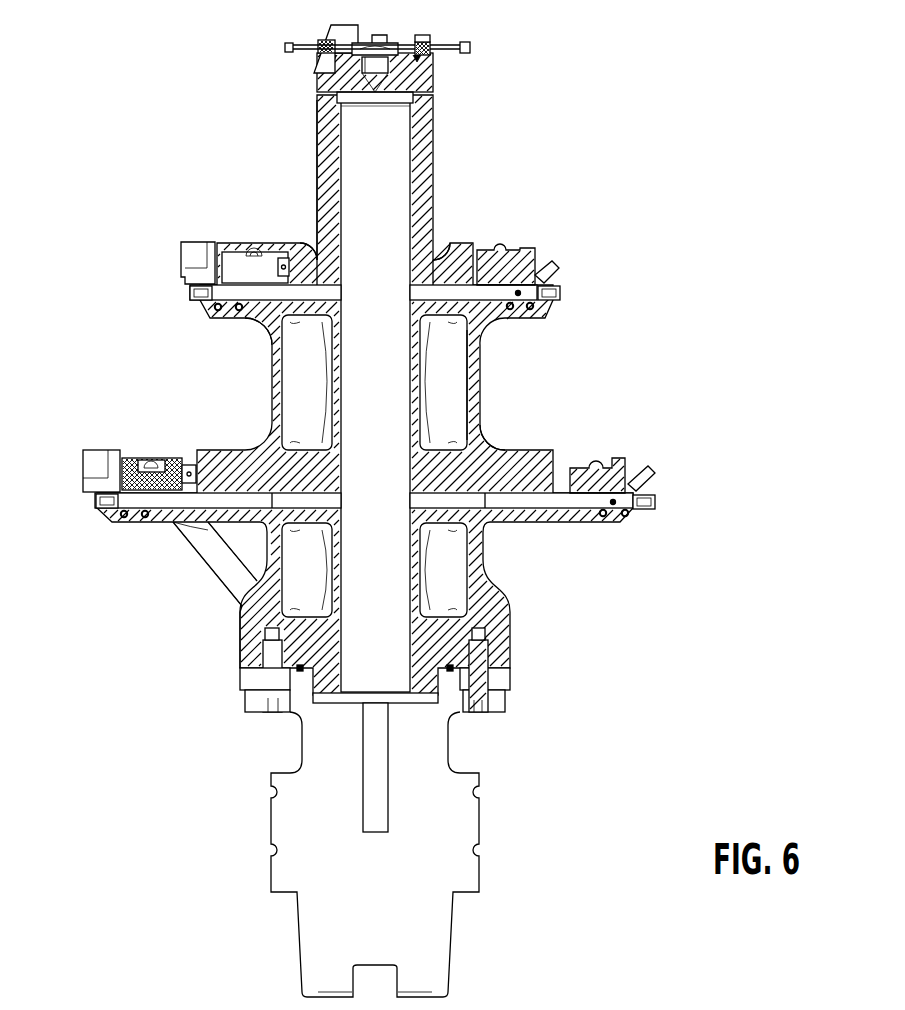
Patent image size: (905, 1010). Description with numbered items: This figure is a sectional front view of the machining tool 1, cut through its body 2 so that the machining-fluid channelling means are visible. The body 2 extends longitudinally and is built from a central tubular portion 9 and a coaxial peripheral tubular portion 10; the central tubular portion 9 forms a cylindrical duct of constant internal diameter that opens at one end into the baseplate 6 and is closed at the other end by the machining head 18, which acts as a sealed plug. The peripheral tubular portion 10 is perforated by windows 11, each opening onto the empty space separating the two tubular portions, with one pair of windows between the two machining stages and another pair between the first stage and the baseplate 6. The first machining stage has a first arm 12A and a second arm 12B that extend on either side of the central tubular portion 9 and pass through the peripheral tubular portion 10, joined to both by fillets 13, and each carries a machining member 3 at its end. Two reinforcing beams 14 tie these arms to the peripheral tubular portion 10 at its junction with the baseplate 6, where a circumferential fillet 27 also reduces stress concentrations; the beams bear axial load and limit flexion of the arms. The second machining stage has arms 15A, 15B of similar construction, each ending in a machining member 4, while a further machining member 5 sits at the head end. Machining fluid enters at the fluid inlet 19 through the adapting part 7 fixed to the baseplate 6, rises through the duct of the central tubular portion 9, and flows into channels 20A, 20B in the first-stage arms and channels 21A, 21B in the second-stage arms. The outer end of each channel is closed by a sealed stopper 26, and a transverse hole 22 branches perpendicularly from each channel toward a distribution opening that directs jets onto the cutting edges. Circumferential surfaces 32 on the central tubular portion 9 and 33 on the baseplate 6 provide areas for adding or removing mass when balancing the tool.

The machining tool 1 is at (568, 192).
The body 2 is at (437, 185).
The machining member 3 is at (101, 458).
The machining member 4 is at (190, 242).
The machining member 5 is at (320, 35).
The baseplate 6 is at (498, 648).
The adapting part 7 is at (467, 818).
The central tubular portion 9 is at (337, 382).
The peripheral tubular portion 10 is at (475, 393).
The window 11 is at (322, 402).
The first arm 12A is at (557, 515).
The second arm 12B is at (163, 517).
The fillet 13 is at (263, 323).
The reinforcing beam 14 is at (218, 565).
The arm 15A is at (503, 312).
The arm 15B is at (228, 312).
The machining head 18 is at (423, 80).
The fluid inlet 19 is at (376, 826).
The channel 20A is at (485, 502).
The channel 20B is at (273, 502).
The channel 21A is at (440, 280).
The channel 21B is at (302, 240).
The transverse hole 22 is at (535, 307).
The stopper 26 is at (195, 292).
The circumferential fillet 27 is at (240, 605).
The circumferential surface 32 is at (316, 130).
The circumferential surface 33 is at (237, 648).